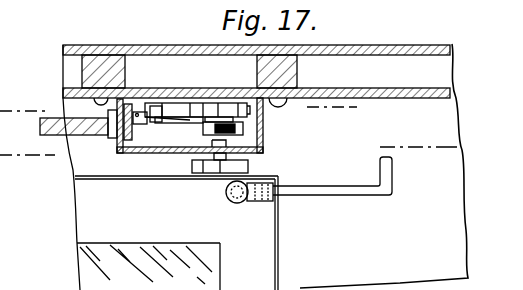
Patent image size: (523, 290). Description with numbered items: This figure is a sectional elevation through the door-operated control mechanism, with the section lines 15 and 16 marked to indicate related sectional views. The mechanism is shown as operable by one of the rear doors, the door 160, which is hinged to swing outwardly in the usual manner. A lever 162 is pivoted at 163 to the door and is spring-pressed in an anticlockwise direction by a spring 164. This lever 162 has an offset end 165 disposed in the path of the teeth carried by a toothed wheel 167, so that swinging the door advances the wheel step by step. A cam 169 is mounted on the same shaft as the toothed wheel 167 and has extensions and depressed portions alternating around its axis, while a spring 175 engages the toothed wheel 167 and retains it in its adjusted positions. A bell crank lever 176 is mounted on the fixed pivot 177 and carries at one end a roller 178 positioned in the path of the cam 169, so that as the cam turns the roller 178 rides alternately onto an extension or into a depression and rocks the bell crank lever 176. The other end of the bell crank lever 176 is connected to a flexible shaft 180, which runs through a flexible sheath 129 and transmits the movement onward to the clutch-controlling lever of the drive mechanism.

The section line 15 is at (20, 84).
The section line 16 is at (27, 120).
The flexible sheath 129 is at (88, 120).
The door 160 is at (83, 218).
The lever 162 is at (348, 190).
The pivot 163 is at (266, 203).
The spring 164 is at (227, 192).
The offset end 165 is at (380, 163).
The toothed wheel 167 is at (246, 110).
The cam 169 is at (244, 130).
The spring 175 is at (176, 107).
The bell crank lever 176 is at (132, 152).
The fixed pivot 177 is at (158, 106).
The roller 178 is at (210, 128).
The flexible shaft 180 is at (134, 110).